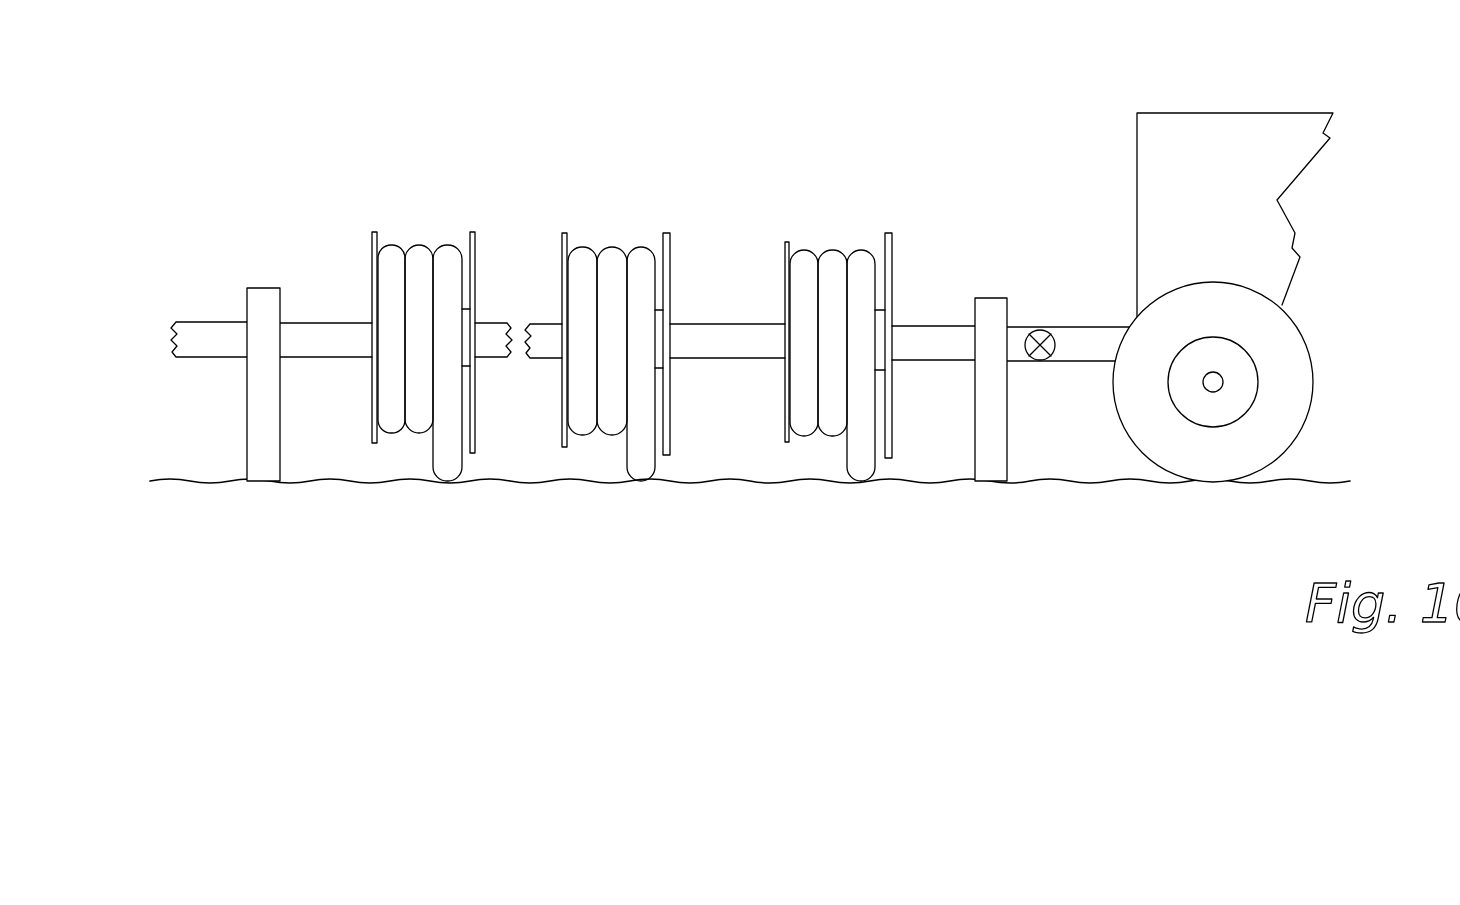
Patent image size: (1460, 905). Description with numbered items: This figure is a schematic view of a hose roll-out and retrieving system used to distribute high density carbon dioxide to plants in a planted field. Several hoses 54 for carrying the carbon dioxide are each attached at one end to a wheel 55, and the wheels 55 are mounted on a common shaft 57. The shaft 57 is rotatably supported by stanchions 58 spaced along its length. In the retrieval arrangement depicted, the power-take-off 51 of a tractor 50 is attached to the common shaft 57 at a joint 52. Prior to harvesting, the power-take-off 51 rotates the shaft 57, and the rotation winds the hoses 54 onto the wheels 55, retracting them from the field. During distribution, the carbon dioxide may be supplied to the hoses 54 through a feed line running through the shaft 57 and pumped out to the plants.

The tractor 50 is at (1220, 113).
The power-take-off 51 is at (1097, 327).
The joint 52 is at (1037, 330).
The hose 54 is at (441, 482).
The wheel 55 is at (475, 456).
The common shaft 57 is at (213, 322).
The stanchion 58 is at (247, 455).